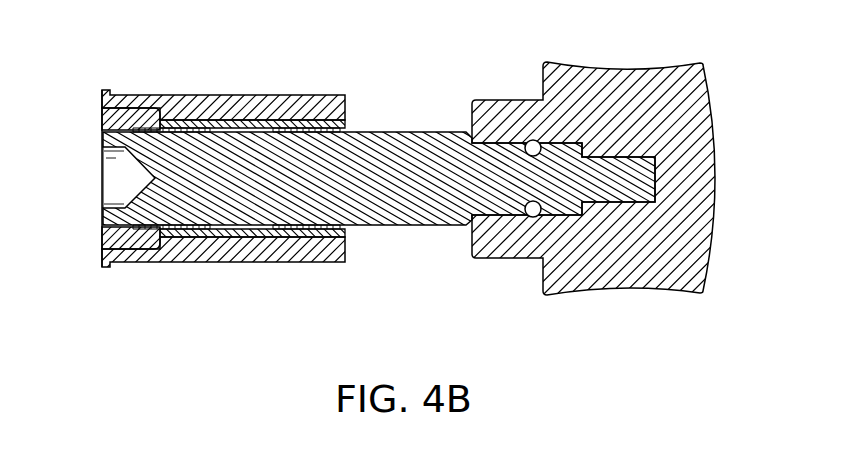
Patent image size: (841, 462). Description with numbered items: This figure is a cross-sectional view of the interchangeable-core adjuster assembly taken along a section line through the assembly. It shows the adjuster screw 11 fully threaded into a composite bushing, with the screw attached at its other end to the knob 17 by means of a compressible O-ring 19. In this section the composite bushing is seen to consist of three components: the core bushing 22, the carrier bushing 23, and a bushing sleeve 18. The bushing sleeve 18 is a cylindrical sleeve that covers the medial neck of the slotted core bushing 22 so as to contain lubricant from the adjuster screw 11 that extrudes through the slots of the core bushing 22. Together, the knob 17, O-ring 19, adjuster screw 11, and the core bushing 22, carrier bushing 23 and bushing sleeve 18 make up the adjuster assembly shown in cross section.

The adjuster screw 11 is at (132, 223).
The knob 17 is at (713, 98).
The bushing sleeve 18 is at (237, 228).
The compressible O-ring 19 is at (534, 218).
The core bushing 22 is at (132, 137).
The carrier bushing 23 is at (344, 96).